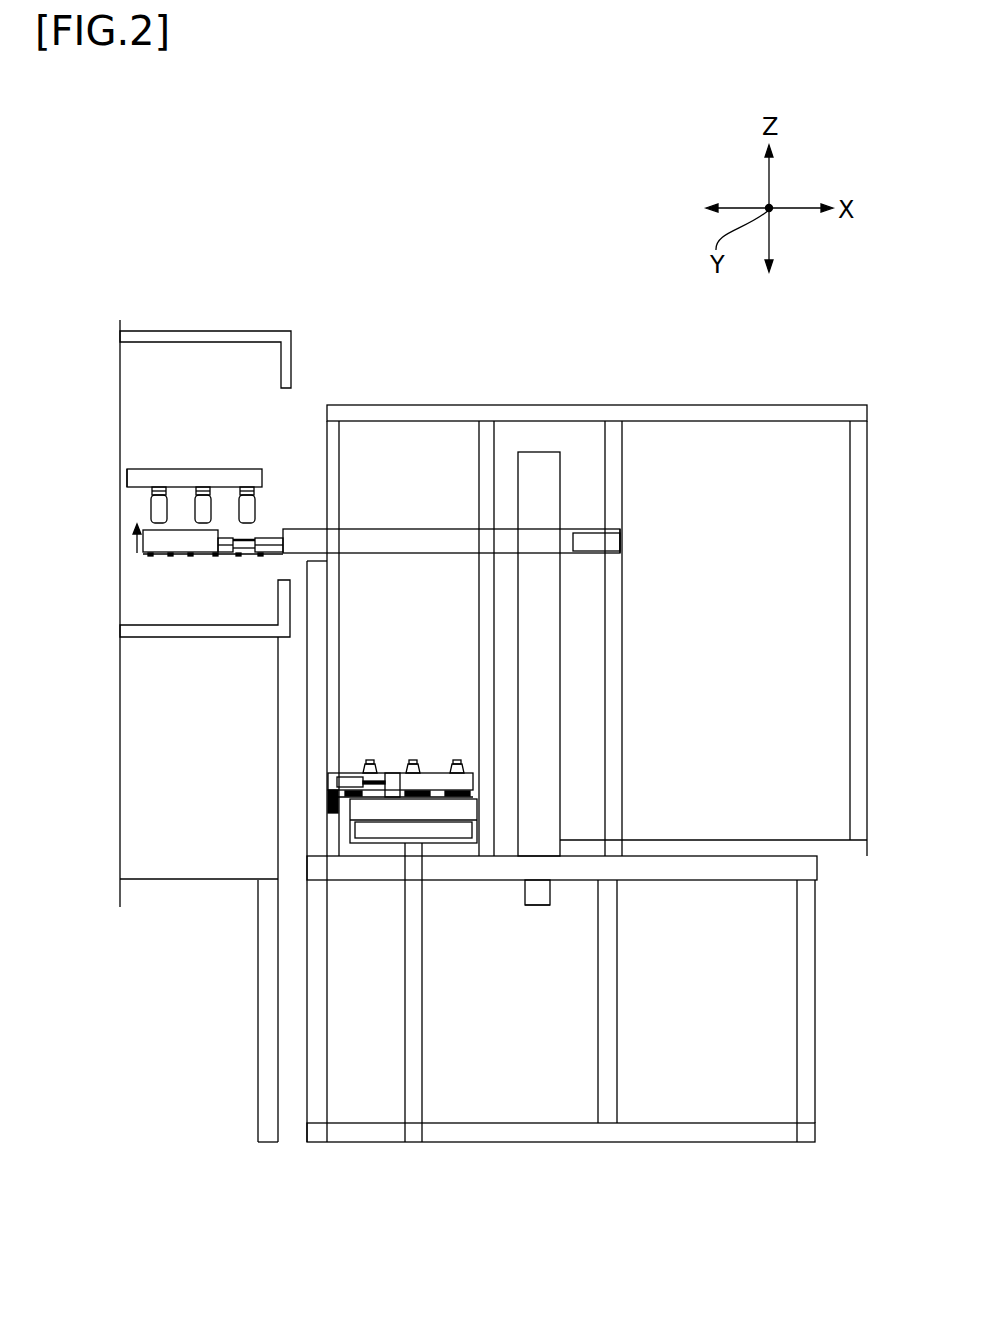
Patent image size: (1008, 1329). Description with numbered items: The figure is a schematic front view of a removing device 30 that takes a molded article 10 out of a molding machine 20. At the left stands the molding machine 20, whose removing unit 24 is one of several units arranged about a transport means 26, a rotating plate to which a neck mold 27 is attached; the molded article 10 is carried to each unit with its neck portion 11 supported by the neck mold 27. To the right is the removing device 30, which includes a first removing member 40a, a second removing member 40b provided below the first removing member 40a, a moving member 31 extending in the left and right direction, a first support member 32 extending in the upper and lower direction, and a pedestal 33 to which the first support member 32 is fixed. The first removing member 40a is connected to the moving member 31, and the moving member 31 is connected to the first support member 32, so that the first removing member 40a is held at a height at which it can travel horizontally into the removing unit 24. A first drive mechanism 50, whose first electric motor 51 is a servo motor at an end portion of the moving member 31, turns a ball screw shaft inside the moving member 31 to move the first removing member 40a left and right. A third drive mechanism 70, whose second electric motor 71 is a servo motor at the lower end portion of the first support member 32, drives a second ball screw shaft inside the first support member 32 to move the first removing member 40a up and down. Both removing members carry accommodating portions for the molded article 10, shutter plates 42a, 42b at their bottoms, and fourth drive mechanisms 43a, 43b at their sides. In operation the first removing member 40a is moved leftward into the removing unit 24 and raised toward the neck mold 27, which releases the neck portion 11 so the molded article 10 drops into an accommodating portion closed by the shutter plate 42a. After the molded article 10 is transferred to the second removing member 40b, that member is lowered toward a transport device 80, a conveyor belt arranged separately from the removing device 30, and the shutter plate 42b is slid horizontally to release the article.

The molded article 10 is at (262, 520).
The neck portion 11 is at (378, 762).
The molding machine 20 is at (148, 326).
The removing unit 24 is at (189, 458).
The transport means 26 is at (128, 470).
The neck mold 27 is at (262, 488).
The removing device 30 is at (808, 386).
The moving member 31 is at (403, 528).
The first support member 32 is at (536, 452).
The pedestal 33 is at (797, 866).
The first removing member 40a is at (148, 530).
The second removing member 40b is at (345, 772).
The shutter plate 42a is at (148, 556).
The shutter plate 42b is at (335, 797).
The fourth drive mechanism 43a is at (268, 556).
The fourth drive mechanism 43b is at (350, 782).
The first drive mechanism 50 is at (636, 534).
The first electric motor 51 is at (612, 545).
The third drive mechanism 70 is at (548, 917).
The second electric motor 71 is at (535, 906).
The transport device 80 is at (375, 808).